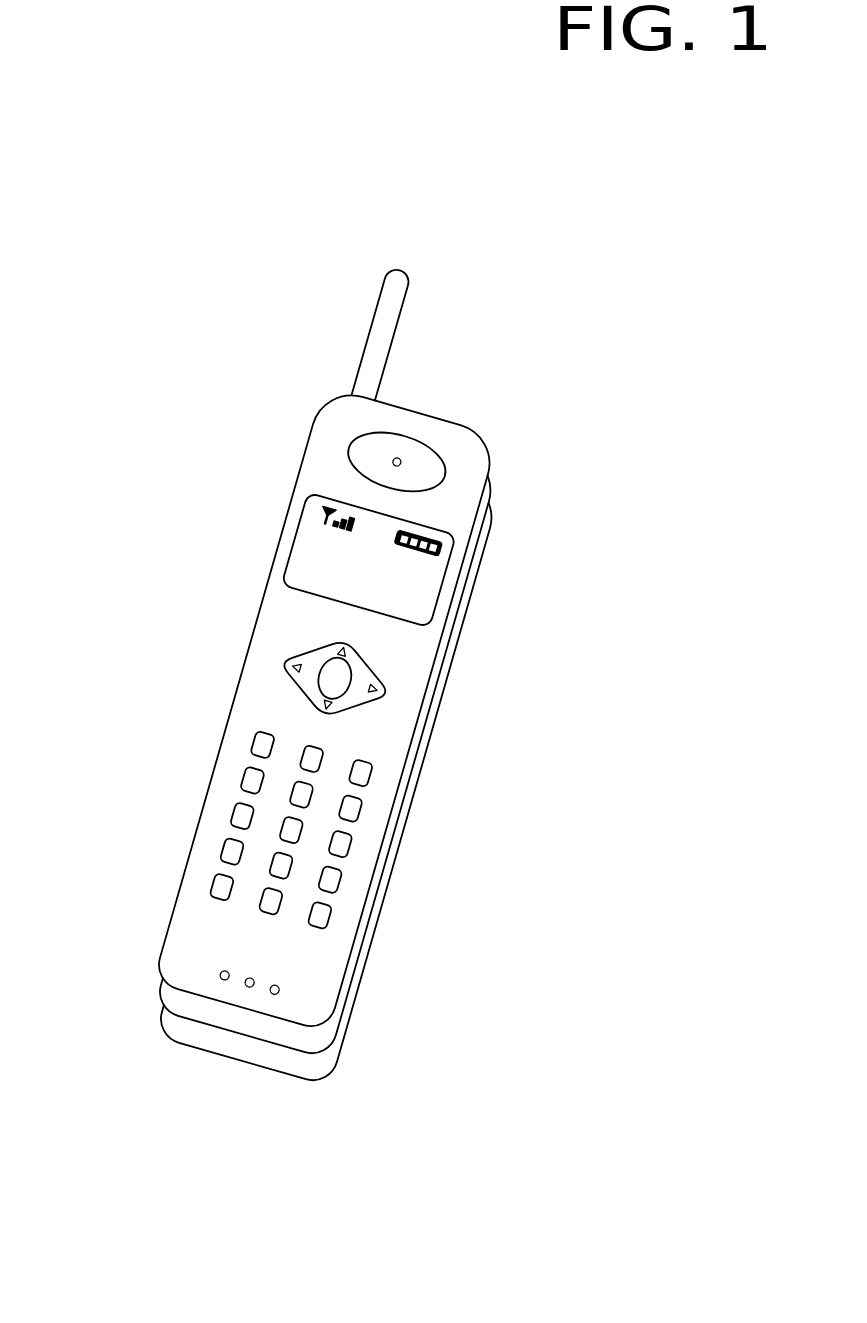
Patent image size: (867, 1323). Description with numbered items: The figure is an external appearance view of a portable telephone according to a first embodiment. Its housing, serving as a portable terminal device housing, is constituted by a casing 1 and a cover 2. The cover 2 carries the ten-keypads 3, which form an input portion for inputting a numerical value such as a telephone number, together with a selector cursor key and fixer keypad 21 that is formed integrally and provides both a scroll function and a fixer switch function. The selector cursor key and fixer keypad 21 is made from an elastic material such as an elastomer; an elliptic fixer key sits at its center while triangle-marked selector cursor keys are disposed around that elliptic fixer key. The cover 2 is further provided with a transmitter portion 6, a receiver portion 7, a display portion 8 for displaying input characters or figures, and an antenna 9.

The casing 1 is at (333, 1058).
The cover 2 is at (316, 460).
The ten-keypads 3 is at (363, 768).
The transmitter portion 6 is at (213, 967).
The receiver portion 7 is at (412, 459).
The display portion 8 is at (445, 527).
The antenna 9 is at (393, 288).
The selector cursor key and fixer keypad 21 is at (390, 668).